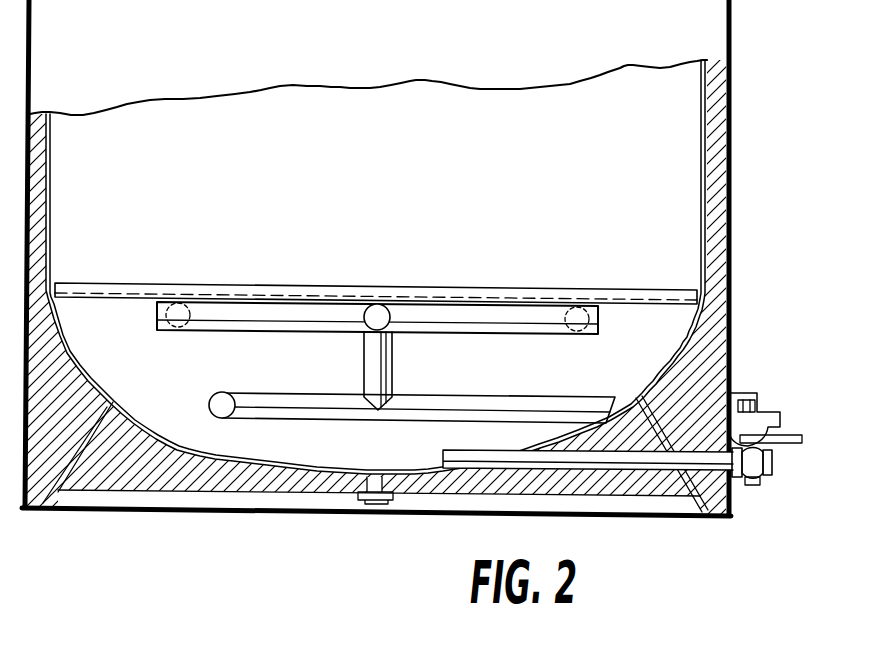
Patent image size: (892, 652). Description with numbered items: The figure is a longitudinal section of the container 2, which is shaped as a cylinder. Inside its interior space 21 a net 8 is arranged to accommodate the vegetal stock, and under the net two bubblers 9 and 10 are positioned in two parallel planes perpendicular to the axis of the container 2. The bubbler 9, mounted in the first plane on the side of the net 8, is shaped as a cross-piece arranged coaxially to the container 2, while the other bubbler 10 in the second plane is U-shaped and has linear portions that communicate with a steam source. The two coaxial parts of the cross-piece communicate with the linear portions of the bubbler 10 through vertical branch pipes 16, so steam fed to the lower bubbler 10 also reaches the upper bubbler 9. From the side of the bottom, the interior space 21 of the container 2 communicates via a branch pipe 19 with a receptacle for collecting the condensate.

The container 2 is at (718, 253).
The interior space 21 is at (685, 182).
The net 8 is at (100, 283).
The bubbler 9 is at (500, 312).
The vertical branch pipes 16 is at (373, 365).
The bubbler 10 is at (523, 400).
The branch pipe 19 is at (718, 457).